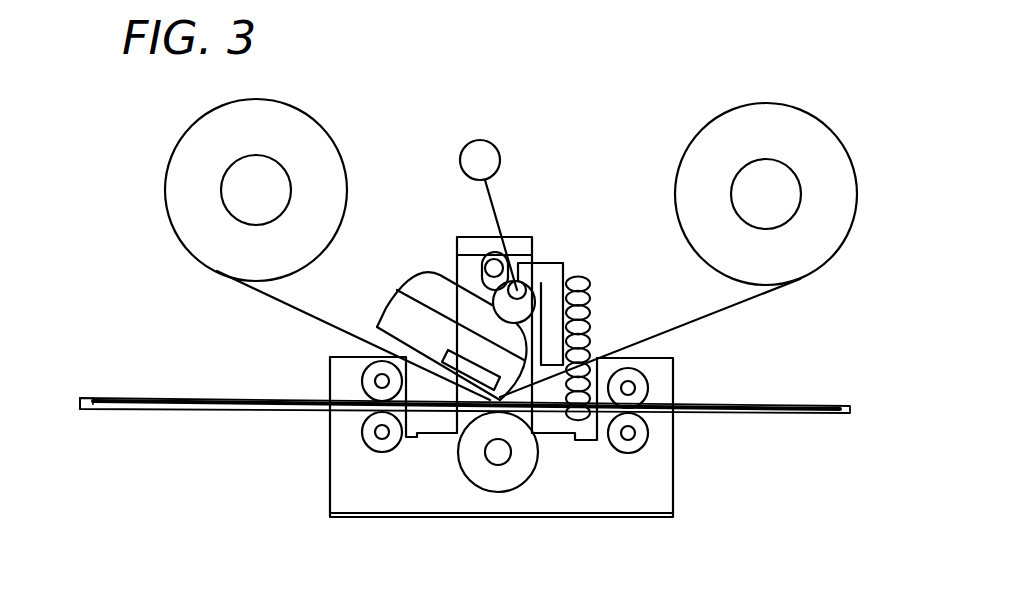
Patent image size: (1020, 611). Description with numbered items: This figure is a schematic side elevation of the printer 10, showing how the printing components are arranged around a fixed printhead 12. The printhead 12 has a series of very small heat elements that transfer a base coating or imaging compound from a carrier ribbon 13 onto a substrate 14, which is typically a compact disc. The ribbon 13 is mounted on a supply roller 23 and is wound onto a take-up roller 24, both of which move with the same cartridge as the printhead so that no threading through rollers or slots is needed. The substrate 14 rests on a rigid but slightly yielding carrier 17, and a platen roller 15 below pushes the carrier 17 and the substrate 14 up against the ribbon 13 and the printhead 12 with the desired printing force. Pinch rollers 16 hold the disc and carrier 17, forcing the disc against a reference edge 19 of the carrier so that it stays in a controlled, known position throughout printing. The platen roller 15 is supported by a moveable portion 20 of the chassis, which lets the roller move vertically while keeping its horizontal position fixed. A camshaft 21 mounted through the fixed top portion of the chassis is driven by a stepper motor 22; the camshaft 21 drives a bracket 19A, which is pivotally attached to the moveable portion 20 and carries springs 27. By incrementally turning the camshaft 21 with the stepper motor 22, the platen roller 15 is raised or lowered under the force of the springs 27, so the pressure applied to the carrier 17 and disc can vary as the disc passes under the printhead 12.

The printer 10 is at (537, 115).
The printhead 12 is at (483, 378).
The carrier ribbon 13 is at (273, 298).
The substrate 14 is at (250, 403).
The platen roller 15 is at (482, 468).
The pinch rollers 16 is at (377, 363).
The carrier 17 is at (100, 412).
The reference edge 19 is at (95, 399).
The clamping bracket 19A is at (543, 270).
The moveable portion of the chassis 20 is at (653, 494).
The camshaft 21 is at (532, 293).
The stepper motor 22 is at (475, 139).
The supply roller 23 is at (178, 212).
The take-up roller 24 is at (712, 150).
The springs 27 is at (589, 325).